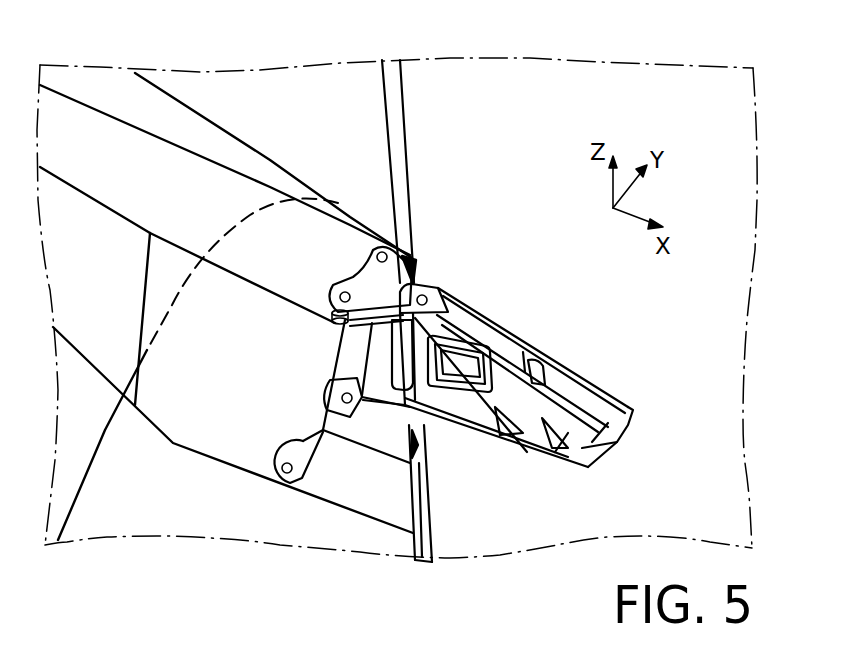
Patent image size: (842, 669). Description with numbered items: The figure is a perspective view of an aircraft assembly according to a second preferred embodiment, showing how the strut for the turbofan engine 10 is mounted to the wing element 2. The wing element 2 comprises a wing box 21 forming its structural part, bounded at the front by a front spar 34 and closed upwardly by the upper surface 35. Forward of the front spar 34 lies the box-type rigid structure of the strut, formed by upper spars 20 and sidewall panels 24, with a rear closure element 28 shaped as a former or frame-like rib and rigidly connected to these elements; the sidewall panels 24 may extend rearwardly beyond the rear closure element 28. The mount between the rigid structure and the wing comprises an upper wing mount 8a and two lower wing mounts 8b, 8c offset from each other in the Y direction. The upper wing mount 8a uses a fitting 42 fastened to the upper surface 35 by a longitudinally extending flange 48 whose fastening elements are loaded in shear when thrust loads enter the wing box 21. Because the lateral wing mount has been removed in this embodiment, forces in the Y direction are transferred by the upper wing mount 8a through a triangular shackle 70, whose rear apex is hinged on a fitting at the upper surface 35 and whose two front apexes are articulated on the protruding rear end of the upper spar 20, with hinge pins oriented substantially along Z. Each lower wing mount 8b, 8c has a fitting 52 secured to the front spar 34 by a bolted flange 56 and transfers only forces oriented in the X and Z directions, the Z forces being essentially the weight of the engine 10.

The wing element 2 is at (537, 120).
The wing box 21 is at (511, 102).
The turbofan engine 10 is at (297, 145).
The upper spar 20 is at (277, 243).
The sidewall panel 24 is at (250, 375).
The rear closure element 28 is at (352, 272).
The front spar 34 is at (398, 95).
The upper surface 35 is at (565, 502).
The fitting 42 is at (483, 332).
The flange 48 is at (610, 407).
The fitting 52 is at (387, 415).
The bolted flange 56 is at (417, 512).
The triangular shackle 70 is at (372, 275).
The upper wing mount 8a is at (548, 338).
The lower wing mount 8b is at (297, 512).
The lower wing mount 8c is at (430, 463).